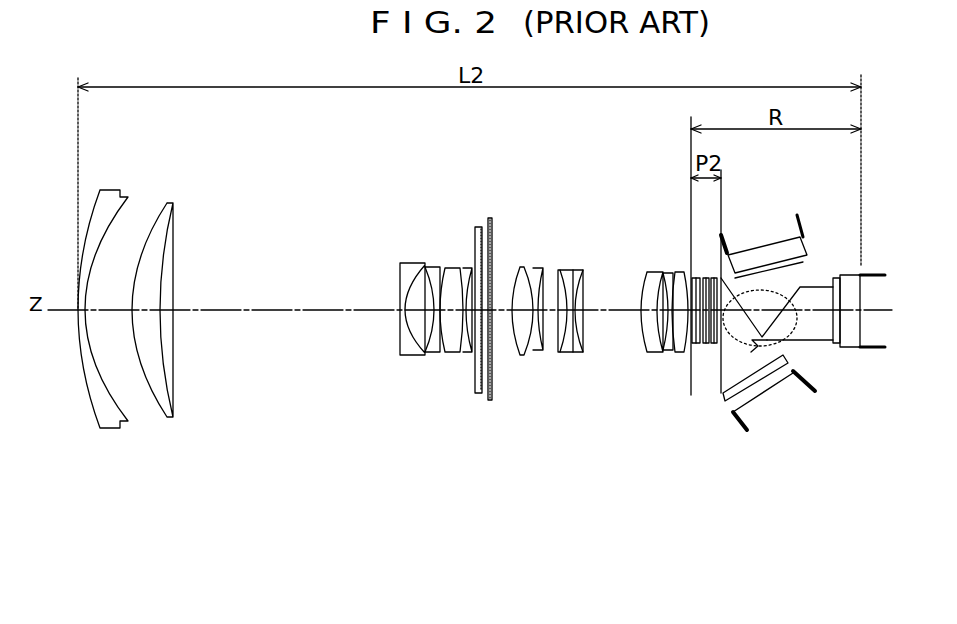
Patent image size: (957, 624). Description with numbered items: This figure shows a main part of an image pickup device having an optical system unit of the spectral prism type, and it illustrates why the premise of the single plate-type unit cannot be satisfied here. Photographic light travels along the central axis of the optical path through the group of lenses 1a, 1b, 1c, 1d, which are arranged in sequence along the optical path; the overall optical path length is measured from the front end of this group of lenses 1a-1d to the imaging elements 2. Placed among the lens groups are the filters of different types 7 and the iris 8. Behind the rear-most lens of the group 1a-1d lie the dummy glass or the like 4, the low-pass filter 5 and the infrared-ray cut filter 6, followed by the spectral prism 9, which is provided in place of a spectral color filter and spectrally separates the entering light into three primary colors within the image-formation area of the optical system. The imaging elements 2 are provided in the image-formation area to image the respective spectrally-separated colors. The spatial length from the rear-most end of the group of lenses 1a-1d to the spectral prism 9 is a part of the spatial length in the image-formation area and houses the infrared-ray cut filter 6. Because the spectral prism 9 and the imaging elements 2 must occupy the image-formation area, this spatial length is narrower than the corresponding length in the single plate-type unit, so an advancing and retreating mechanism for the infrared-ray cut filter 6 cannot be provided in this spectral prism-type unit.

The group of lenses 1a is at (181, 164).
The group of lenses 1b is at (472, 241).
The group of lenses 1c is at (595, 241).
The group of lenses 1d is at (688, 242).
The imaging element 2 is at (767, 257).
The dummy glass 4 is at (714, 345).
The low-pass filter 5 is at (705, 345).
The infrared-ray cut filter 6 is at (693, 345).
The filters of different types 7 is at (490, 370).
The iris 8 is at (478, 358).
The spectral prism 9 is at (755, 347).